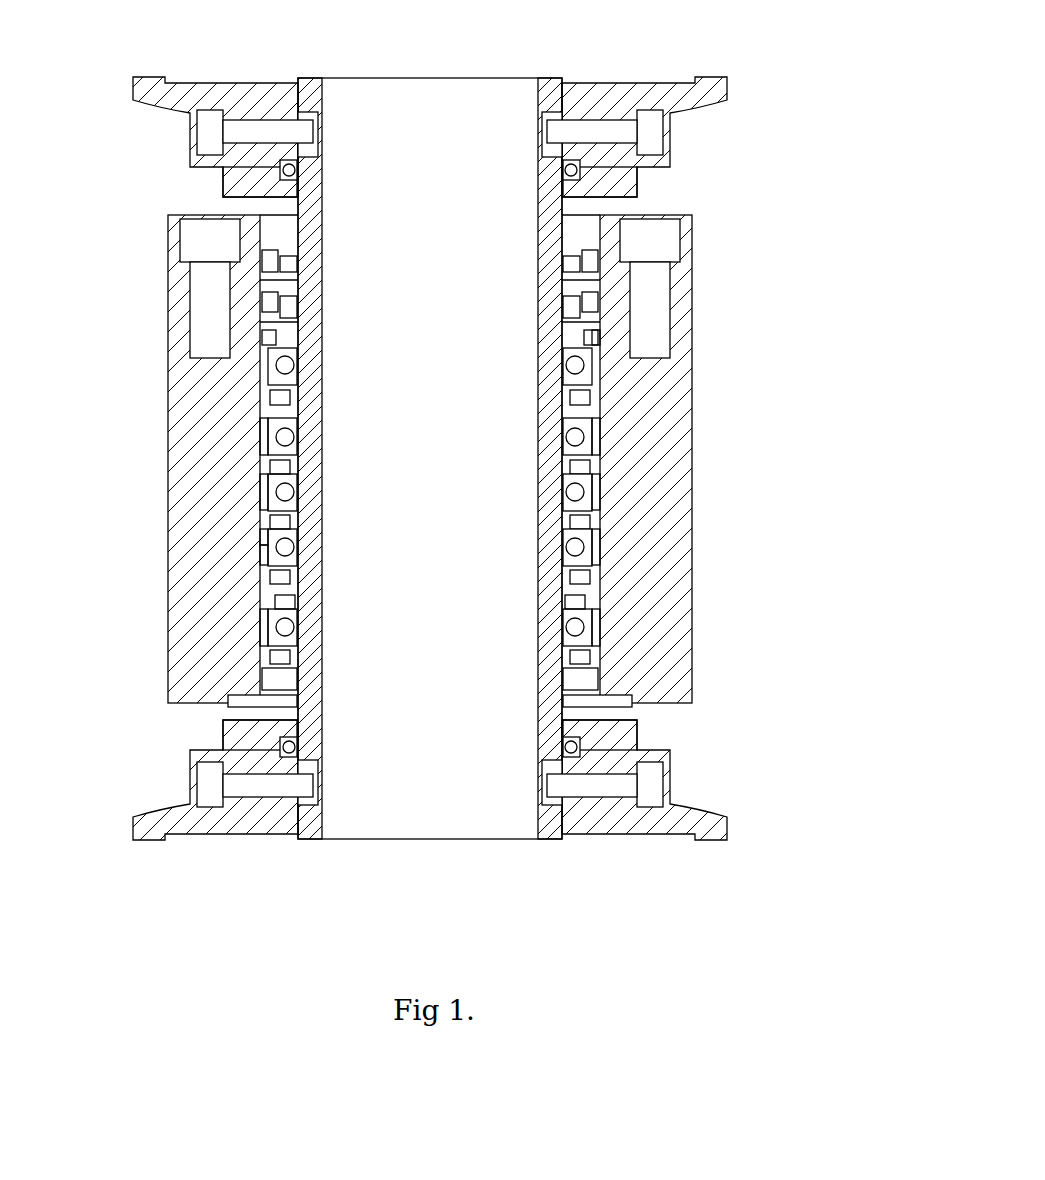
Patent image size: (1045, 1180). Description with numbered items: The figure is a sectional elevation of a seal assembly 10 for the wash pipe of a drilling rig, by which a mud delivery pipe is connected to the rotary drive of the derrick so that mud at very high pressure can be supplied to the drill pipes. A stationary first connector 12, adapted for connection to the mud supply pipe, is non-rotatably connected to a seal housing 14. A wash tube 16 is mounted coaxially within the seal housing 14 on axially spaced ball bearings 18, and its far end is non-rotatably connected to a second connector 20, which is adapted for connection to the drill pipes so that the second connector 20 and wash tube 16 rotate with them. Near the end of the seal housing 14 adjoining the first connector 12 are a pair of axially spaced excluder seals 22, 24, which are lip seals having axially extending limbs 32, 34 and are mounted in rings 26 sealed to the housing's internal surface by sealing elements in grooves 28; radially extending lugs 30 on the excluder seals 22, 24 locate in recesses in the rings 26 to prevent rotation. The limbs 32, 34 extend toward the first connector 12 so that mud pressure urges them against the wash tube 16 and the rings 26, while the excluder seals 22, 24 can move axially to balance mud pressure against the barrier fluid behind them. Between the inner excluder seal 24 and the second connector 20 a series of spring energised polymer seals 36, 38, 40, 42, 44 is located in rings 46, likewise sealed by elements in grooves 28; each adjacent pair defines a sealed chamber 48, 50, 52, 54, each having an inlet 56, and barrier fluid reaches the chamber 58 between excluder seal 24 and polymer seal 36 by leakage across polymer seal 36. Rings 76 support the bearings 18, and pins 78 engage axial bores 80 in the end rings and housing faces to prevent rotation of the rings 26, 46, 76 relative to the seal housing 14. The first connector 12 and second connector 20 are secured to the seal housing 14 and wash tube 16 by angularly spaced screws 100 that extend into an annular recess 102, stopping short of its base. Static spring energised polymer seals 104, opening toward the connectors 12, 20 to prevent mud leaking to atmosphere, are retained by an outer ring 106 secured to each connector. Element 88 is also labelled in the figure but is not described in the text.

The seal assembly 10 is at (718, 734).
The first connector 12 is at (728, 83).
The seal housing 14 is at (170, 292).
The wash tube 16 is at (318, 690).
The ball bearings 18 is at (275, 386).
The second connector 20 is at (135, 838).
The excluder seal 22 is at (250, 262).
The excluder seal 24 is at (273, 312).
The rings 26 is at (600, 286).
The grooves 28 is at (585, 657).
The lugs 30 is at (600, 322).
The limb 32 is at (576, 263).
The limb 34 is at (592, 266).
The spring energised polymer seal 36 is at (277, 357).
The spring energised polymer seal 38 is at (255, 452).
The spring energised polymer seal 40 is at (273, 508).
The spring energised polymer seal 42 is at (273, 563).
The spring energised polymer seal 44 is at (260, 647).
The rings 46 is at (586, 627).
The sealed chamber 48 is at (277, 413).
The sealed chamber 50 is at (280, 482).
The sealed chamber 52 is at (260, 535).
The sealed chamber 54 is at (273, 622).
The inlet 56 is at (275, 418).
The chamber 58 is at (278, 338).
The rings 76 is at (590, 602).
The pins 78 is at (263, 256).
The axial bores 80 is at (258, 262).
The spacer 88 is at (593, 668).
The screws 100 is at (210, 137).
The annular recess 102 is at (545, 770).
The spring energised polymer seal 104 is at (280, 748).
The outer ring 106 is at (223, 735).